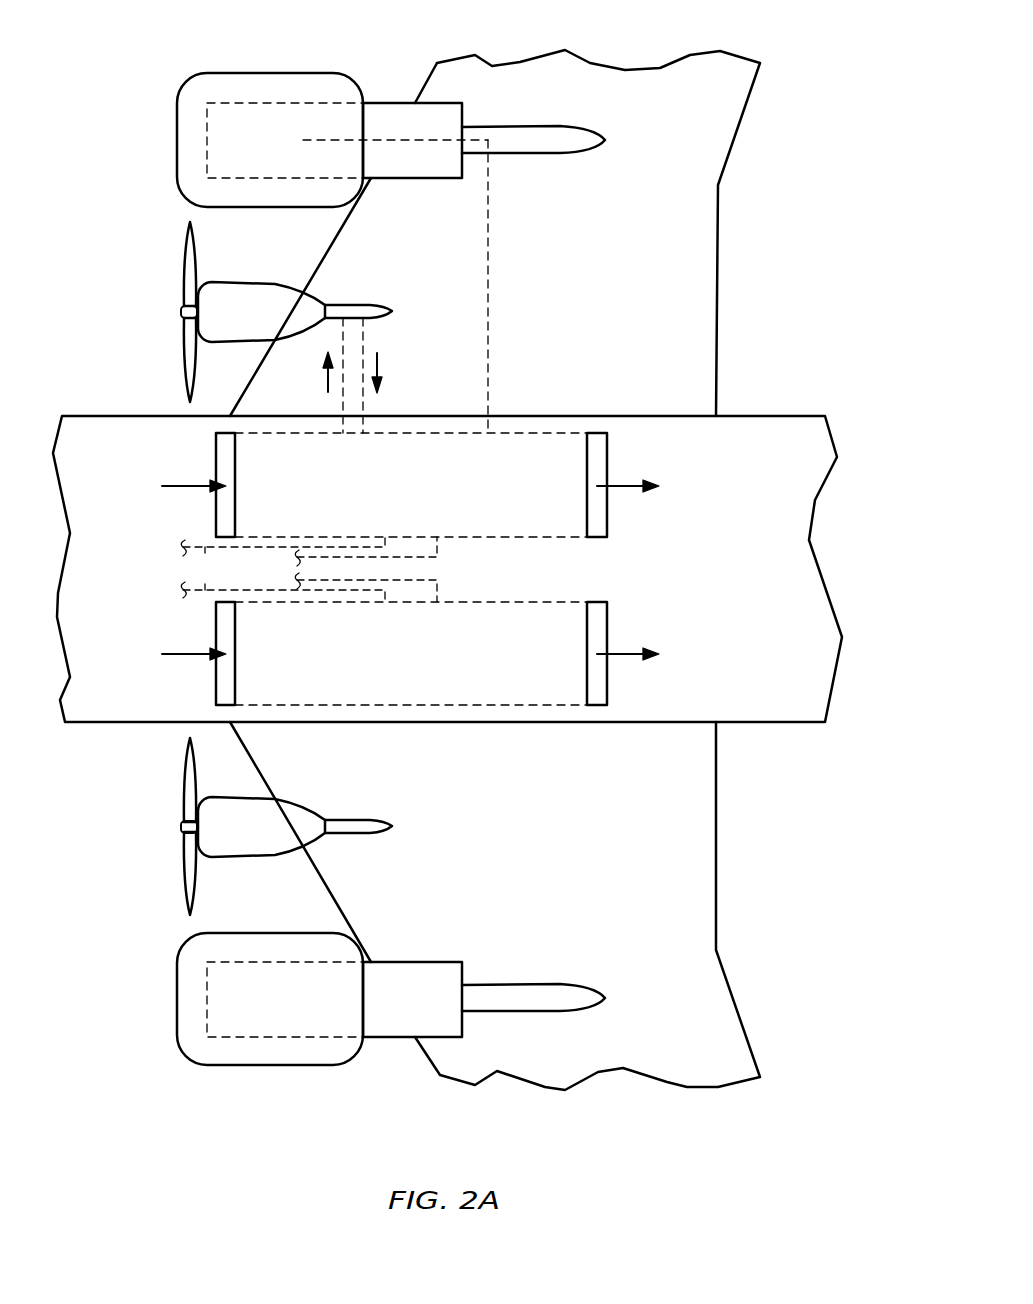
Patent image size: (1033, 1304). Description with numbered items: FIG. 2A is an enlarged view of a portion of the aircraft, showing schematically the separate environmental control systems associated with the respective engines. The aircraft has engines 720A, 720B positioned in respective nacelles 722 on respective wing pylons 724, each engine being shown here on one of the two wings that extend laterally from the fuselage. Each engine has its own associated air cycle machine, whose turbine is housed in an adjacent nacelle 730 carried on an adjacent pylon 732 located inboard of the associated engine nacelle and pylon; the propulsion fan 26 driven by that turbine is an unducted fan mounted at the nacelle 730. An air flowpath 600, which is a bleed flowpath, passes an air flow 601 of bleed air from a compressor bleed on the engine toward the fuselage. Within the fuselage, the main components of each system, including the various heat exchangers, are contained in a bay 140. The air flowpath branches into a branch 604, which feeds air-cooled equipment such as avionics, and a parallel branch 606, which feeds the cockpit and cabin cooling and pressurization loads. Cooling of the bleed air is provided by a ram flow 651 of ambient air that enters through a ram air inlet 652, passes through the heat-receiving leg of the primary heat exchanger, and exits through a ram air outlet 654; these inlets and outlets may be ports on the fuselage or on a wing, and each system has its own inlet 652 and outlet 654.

The propulsion fan 26 is at (165, 345).
The bay 140 is at (563, 433).
The air flowpath 600 is at (488, 287).
The air flow 601 is at (464, 370).
The branch 604 is at (447, 543).
The branch 606 is at (205, 549).
The ram flow 651 is at (168, 484).
The ram air inlet 652 is at (225, 685).
The ram air outlet 654 is at (600, 690).
The engine 720A is at (240, 110).
The engine 720B is at (260, 1023).
The nacelle 722 is at (303, 1065).
The wing pylon 724 is at (545, 138).
The nacelle 730 is at (232, 279).
The pylon 732 is at (348, 308).